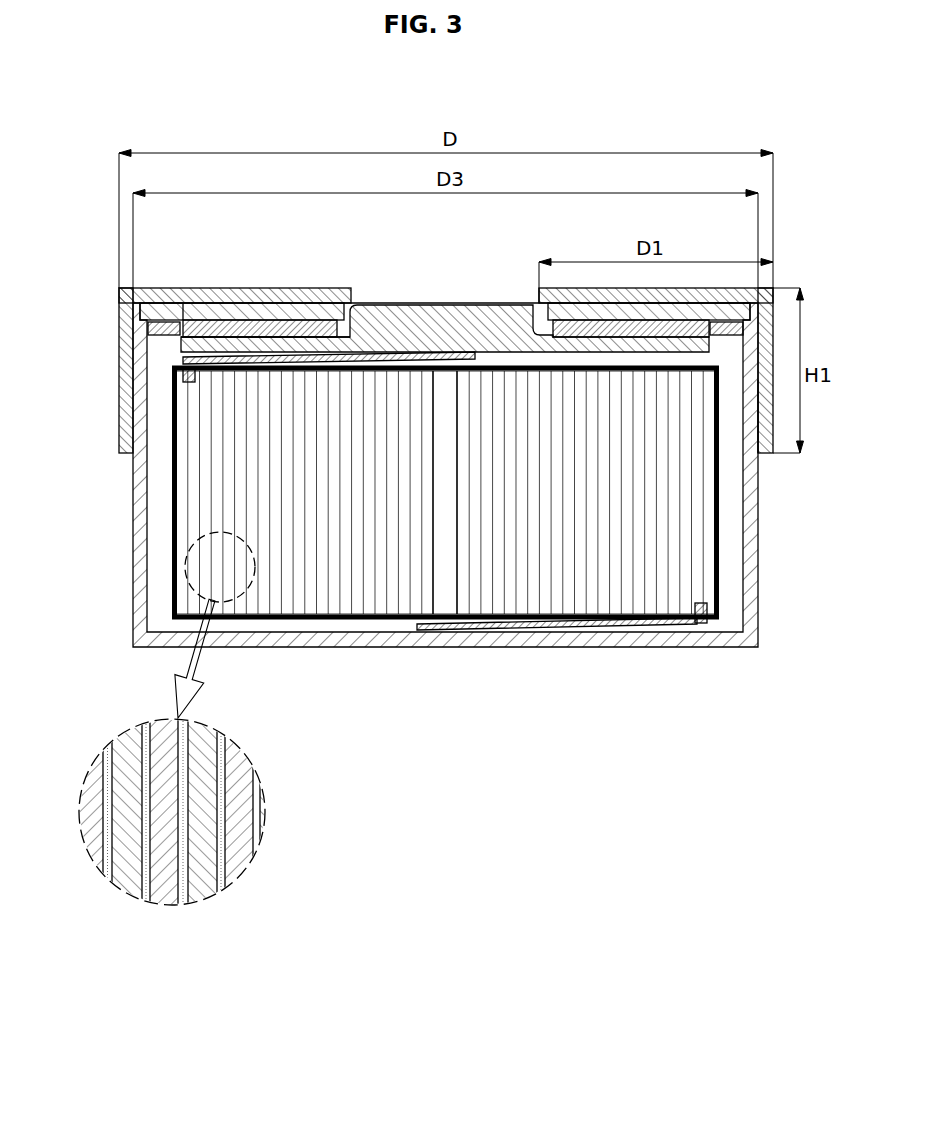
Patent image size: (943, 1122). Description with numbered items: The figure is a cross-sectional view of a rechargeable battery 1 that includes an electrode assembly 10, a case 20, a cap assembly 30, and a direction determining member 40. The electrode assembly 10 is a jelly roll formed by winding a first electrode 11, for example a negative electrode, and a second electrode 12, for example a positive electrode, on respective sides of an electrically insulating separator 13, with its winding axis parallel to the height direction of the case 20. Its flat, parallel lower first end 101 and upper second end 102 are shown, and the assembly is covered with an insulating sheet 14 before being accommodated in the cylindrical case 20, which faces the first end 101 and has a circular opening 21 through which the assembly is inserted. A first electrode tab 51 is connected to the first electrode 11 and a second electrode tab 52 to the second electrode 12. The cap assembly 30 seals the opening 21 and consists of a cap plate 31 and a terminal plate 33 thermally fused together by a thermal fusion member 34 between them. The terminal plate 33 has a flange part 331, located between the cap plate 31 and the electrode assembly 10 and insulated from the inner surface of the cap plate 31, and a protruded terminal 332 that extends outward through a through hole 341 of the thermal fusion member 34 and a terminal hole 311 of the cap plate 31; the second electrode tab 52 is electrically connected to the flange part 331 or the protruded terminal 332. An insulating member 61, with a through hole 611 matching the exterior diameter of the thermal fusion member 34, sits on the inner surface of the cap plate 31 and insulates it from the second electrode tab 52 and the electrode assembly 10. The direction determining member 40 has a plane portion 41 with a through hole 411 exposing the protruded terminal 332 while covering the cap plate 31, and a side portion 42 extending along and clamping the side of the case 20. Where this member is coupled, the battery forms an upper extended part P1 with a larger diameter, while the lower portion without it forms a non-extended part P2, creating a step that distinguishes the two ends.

The rechargeable battery 1 is at (444, 94).
The electrode assembly 10 is at (488, 476).
The first end 101 is at (372, 634).
The second end 102 is at (488, 352).
The first electrode 11 is at (167, 903).
The second electrode 12 is at (205, 903).
The separator 13 is at (191, 833).
The insulating sheet 14 is at (720, 528).
The case 20 is at (136, 508).
The opening 21 is at (744, 300).
The cap assembly 30 is at (456, 278).
The cap plate 31 is at (218, 308).
The terminal hole 311 is at (535, 318).
The terminal plate 33 is at (445, 277).
The flange part 331 is at (323, 344).
The protruded terminal 332 is at (384, 310).
The thermal fusion member 34 is at (262, 324).
The through hole 341 is at (560, 320).
The direction determining member 40 is at (438, 325).
The plane portion 41 is at (702, 289).
The through hole 411 is at (536, 300).
The side portion 42 is at (773, 412).
The first electrode tab 51 is at (605, 629).
The second electrode tab 52 is at (183, 358).
The insulating member 61 is at (160, 330).
The through hole 611 is at (185, 305).
The extended part P1 is at (87, 413).
The non-extended part P2 is at (97, 546).